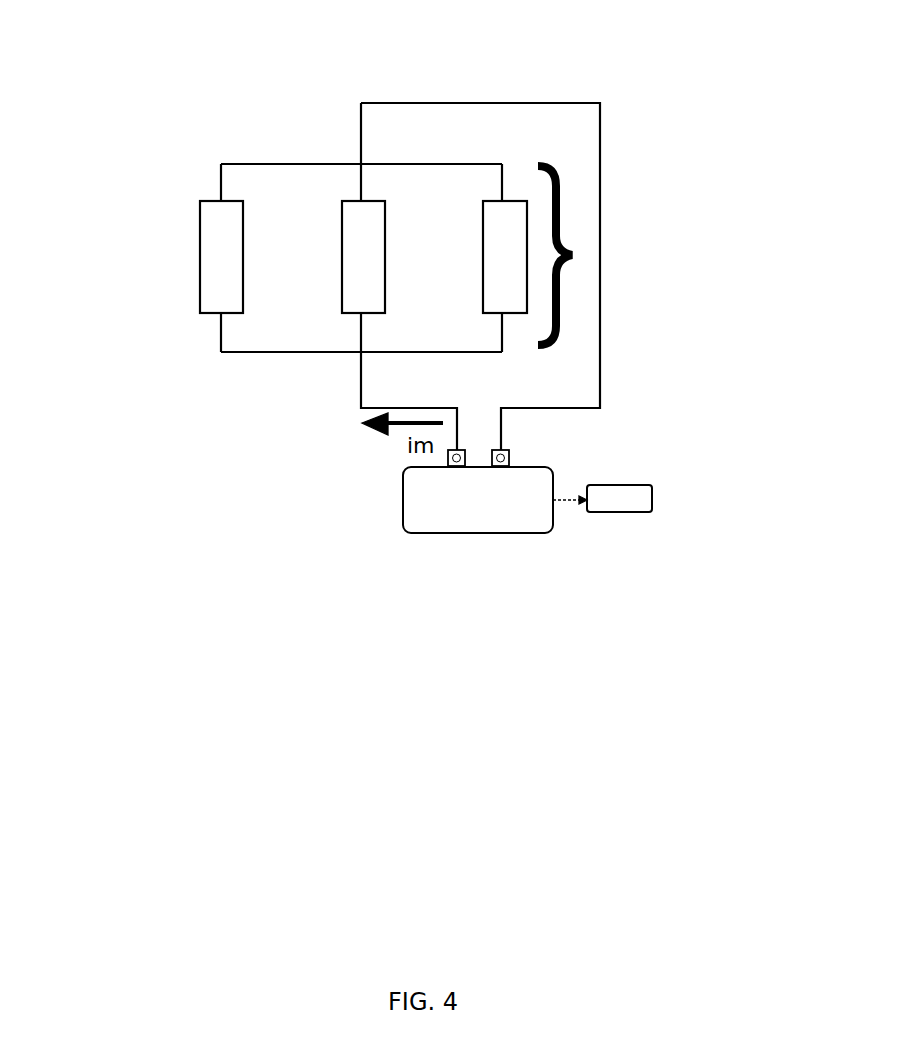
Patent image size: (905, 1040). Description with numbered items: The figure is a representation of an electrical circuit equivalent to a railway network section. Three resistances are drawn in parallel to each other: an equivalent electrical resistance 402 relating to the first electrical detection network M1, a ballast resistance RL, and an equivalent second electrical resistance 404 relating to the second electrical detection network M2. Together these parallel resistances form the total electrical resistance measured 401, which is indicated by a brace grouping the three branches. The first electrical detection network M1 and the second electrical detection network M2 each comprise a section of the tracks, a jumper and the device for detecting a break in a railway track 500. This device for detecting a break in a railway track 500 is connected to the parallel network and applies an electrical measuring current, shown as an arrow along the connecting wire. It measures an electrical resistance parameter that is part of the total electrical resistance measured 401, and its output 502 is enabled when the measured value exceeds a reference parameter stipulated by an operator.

The equivalent electrical resistance 402 is at (172, 253).
The ballast resistance RL is at (314, 253).
The equivalent second electrical resistance 404 is at (457, 253).
The first electrical detection network M1 is at (295, 329).
The second electrical detection network M2 is at (438, 329).
The total electrical resistance measured 401 is at (580, 255).
The device for detecting a break in a railway track 500 is at (380, 493).
The output 502 is at (675, 493).